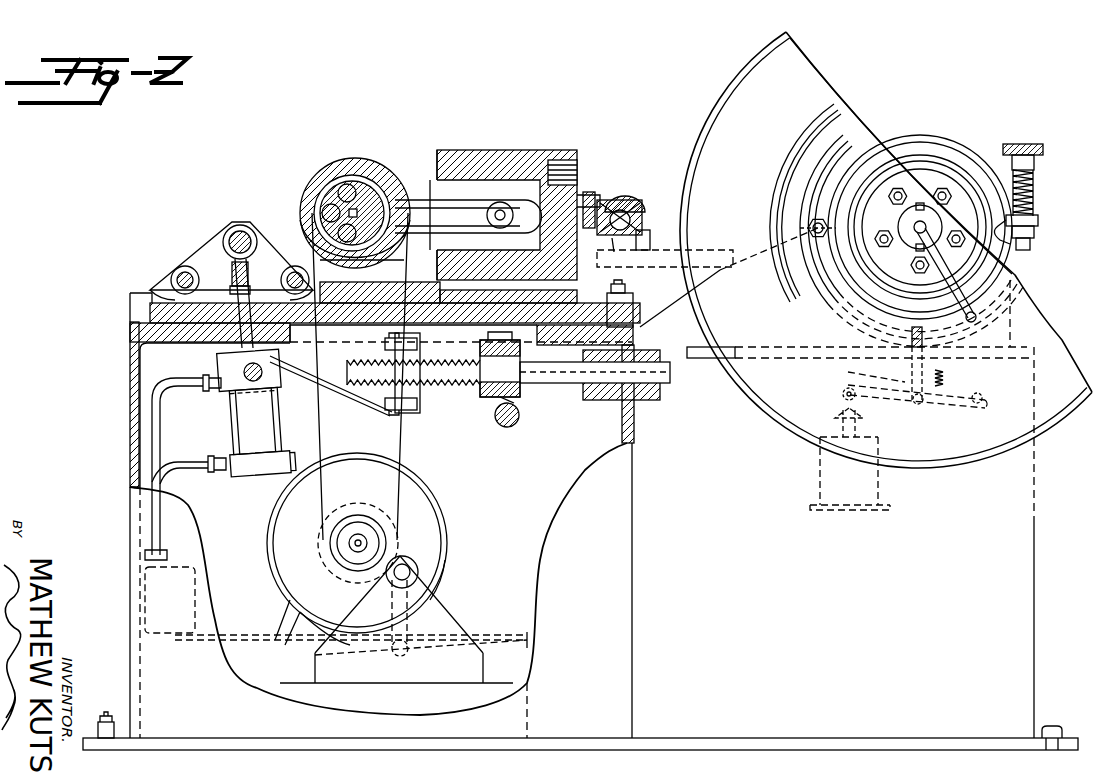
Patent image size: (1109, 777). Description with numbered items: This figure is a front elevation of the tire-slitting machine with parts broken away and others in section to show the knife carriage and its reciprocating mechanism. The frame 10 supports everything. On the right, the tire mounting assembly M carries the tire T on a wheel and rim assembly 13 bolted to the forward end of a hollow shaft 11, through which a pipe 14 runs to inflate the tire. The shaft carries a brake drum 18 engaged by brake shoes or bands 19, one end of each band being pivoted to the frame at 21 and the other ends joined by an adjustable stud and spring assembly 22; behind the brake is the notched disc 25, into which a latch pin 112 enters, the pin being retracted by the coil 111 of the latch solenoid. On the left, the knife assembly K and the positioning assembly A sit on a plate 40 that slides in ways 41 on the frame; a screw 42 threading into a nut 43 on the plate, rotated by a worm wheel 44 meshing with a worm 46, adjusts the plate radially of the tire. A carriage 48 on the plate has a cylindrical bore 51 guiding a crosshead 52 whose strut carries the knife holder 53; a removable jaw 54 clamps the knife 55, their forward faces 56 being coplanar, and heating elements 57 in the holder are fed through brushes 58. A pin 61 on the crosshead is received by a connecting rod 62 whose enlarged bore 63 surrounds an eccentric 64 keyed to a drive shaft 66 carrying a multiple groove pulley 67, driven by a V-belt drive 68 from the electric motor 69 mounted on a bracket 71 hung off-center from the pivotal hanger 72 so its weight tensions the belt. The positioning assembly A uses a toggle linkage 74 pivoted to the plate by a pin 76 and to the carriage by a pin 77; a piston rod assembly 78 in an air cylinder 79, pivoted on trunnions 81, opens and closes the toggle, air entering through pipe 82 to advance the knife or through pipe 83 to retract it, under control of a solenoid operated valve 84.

The frame 10 is at (122, 443).
The hollow shaft 11 is at (902, 222).
The wheel and rim assembly 13 is at (1015, 290).
The pipe 14 is at (914, 248).
The brake drum 18 is at (945, 152).
The brake shoes or bands 19 is at (940, 140).
The pivotal mounting 21 is at (806, 228).
The stud and spring assembly 22 is at (1041, 134).
The disc 25 is at (815, 333).
The plate 40 is at (150, 308).
The ways 41 is at (625, 318).
The screw 42 is at (476, 395).
The nut 43 is at (418, 390).
The worm wheel 44 is at (518, 392).
The worm 46 is at (518, 415).
The base or carriage 48 is at (445, 298).
The cylindrical bore 51 is at (565, 160).
The crosshead 52 is at (495, 150).
The knife holder 53 is at (600, 200).
The removable jaw 54 is at (628, 202).
The knife 55 is at (648, 218).
The forward faces 56 is at (640, 208).
The electrical heating elements 57 is at (615, 240).
The brushes 58 is at (650, 250).
The pin 61 is at (502, 200).
The connecting rod 62 is at (405, 198).
The enlarged bore 63 is at (335, 185).
The eccentric 64 is at (340, 205).
The drive shaft 66 is at (362, 175).
The multiple groove pulley 67 is at (380, 165).
The multiple V-belt drive 68 is at (405, 458).
The electric motor 69 is at (440, 538).
The bracket 71 is at (310, 650).
The pivotal support or hanger 72 is at (416, 562).
The toggle linkage 74 is at (236, 230).
The pin 76 is at (175, 275).
The pin 77 is at (296, 266).
The piston rod assembly 78 is at (243, 335).
The air cylinder 79 is at (235, 418).
The trunnions 81 is at (262, 380).
The air supply pipe 82 is at (192, 372).
The air supply pipe 83 is at (180, 470).
The solenoid operated valve 84 is at (195, 588).
The latch operating solenoid coil 111 is at (818, 462).
The latch pin 112 is at (890, 370).
The knife positioning assembly A is at (188, 243).
The reciprocating knife assembly K is at (604, 164).
The tire mounting assembly M is at (881, 114).
The tire T is at (740, 62).